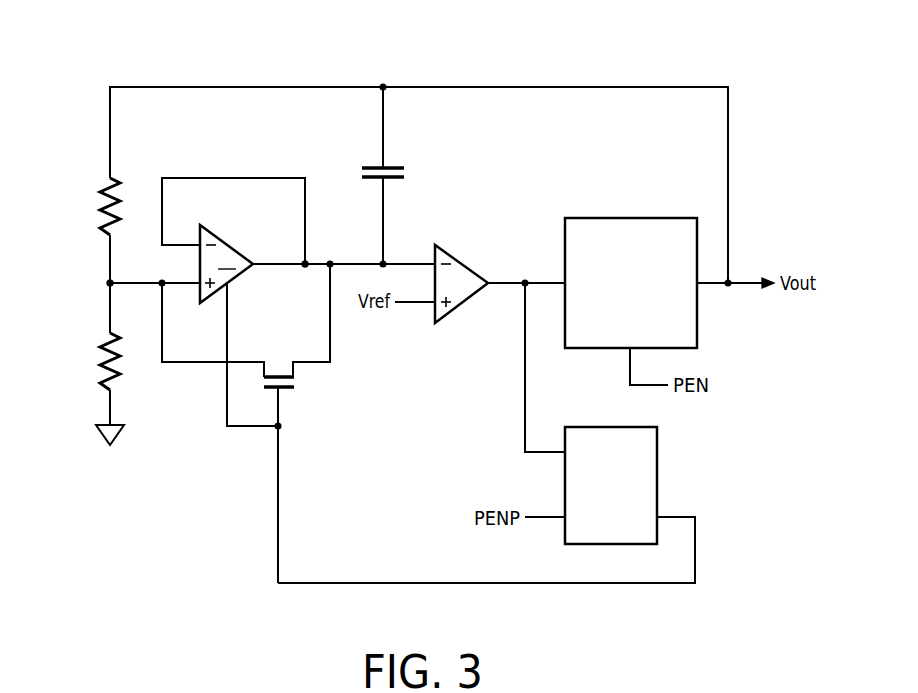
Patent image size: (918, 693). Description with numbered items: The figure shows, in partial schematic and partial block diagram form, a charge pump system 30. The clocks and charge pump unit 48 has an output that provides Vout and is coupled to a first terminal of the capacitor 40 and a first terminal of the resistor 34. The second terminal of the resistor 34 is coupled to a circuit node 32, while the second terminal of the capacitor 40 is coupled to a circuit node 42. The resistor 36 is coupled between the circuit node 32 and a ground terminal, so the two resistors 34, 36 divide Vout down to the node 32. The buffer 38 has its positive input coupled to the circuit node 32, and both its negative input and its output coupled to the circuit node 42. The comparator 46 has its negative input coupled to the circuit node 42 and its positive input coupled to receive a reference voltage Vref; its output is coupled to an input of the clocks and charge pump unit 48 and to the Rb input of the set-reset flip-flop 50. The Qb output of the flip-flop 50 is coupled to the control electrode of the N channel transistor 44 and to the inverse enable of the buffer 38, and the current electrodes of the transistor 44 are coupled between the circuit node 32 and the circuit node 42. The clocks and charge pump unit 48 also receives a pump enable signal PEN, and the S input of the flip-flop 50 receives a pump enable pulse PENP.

The charge pump system 30 is at (89, 42).
The circuit node 32 is at (105, 282).
The resistor 34 is at (100, 190).
The resistor 36 is at (100, 350).
The buffer 38 is at (224, 238).
The capacitor 40 is at (393, 157).
The circuit node 42 is at (274, 263).
The N channel transistor 44 is at (278, 374).
The comparator 46 is at (456, 252).
The clocks and charge pump unit 48 is at (645, 218).
The set-reset (SR) flip-flop 50 is at (657, 452).